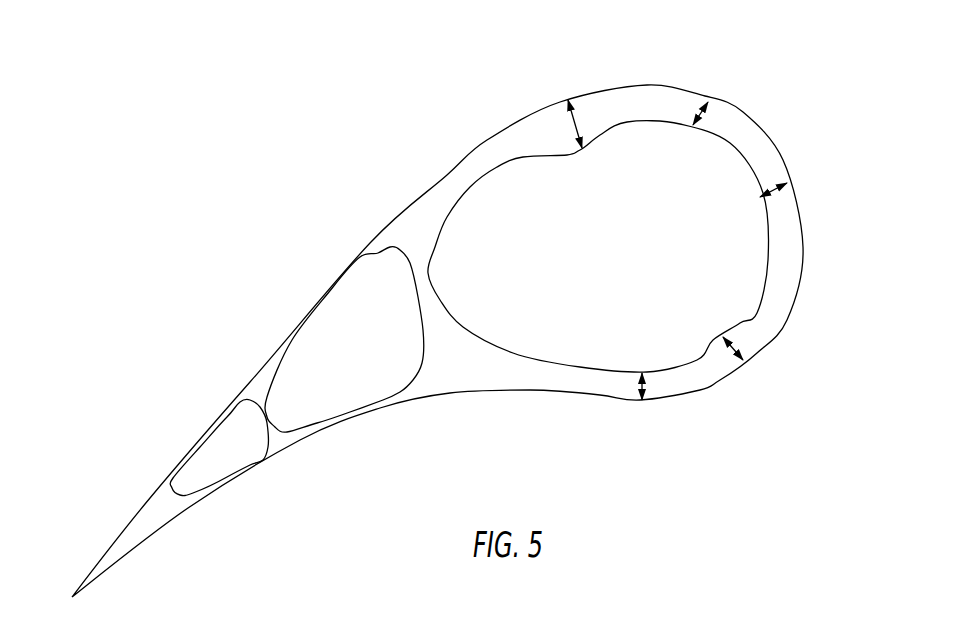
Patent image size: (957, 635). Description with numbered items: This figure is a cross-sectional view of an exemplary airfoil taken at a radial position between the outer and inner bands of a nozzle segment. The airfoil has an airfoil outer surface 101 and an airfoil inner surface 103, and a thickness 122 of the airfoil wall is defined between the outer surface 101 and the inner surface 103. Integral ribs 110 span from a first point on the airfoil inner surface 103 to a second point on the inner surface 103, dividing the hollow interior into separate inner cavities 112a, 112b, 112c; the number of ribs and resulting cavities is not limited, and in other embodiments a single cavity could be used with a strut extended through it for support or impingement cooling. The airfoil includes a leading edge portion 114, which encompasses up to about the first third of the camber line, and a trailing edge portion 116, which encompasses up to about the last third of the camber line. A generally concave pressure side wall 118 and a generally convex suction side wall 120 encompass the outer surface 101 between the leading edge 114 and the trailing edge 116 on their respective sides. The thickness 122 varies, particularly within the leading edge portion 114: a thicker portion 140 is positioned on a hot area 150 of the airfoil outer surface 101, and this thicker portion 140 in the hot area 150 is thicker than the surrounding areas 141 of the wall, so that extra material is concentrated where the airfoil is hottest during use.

The airfoil outer surface 101 is at (596, 404).
The airfoil inner surface 103 is at (528, 349).
The integral ribs 110 is at (429, 287).
The inner cavity 112a is at (632, 252).
The inner cavity 112b is at (371, 307).
The inner cavity 112c is at (245, 433).
The leading edge portion 114 is at (860, 165).
The trailing edge portion 116 is at (64, 538).
The pressure side wall 118 is at (384, 420).
The suction side wall 120 is at (333, 166).
The thickness 122 is at (762, 188).
The thicker portion 140 is at (577, 120).
The surrounding areas 141 is at (707, 112).
The hot area 150 is at (510, 80).